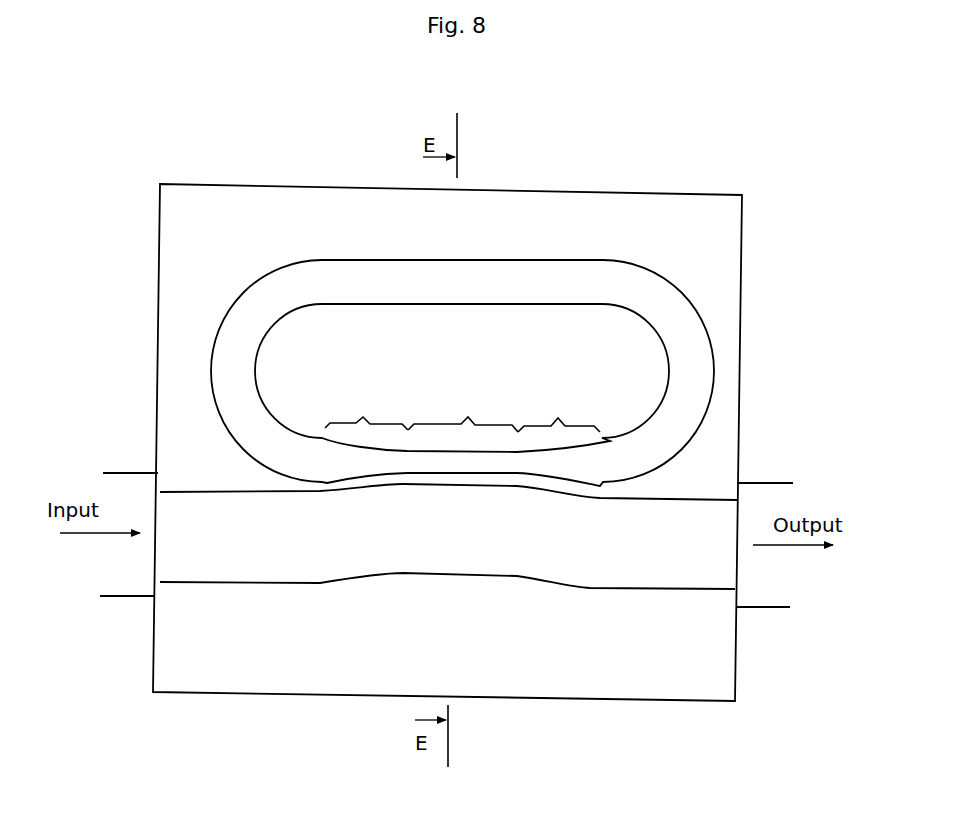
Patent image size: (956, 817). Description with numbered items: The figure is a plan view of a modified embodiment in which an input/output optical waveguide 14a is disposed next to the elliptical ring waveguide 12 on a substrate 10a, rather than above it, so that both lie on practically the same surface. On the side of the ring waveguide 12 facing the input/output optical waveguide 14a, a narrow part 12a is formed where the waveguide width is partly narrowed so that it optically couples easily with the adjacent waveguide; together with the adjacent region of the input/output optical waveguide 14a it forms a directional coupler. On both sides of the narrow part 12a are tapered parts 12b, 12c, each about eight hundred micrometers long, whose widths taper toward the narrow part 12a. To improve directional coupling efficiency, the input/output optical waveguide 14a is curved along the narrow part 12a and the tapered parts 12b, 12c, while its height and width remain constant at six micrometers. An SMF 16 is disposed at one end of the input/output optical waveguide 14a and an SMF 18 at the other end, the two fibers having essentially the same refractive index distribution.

The substrate 10a is at (728, 235).
The ring waveguide 12 is at (345, 275).
The narrow part 12a is at (463, 412).
The tapered part 12b is at (366, 411).
The tapered part 12c is at (559, 413).
The input/output optical waveguide 14a is at (635, 568).
The SMF 16 is at (117, 575).
The SMF 18 is at (758, 585).